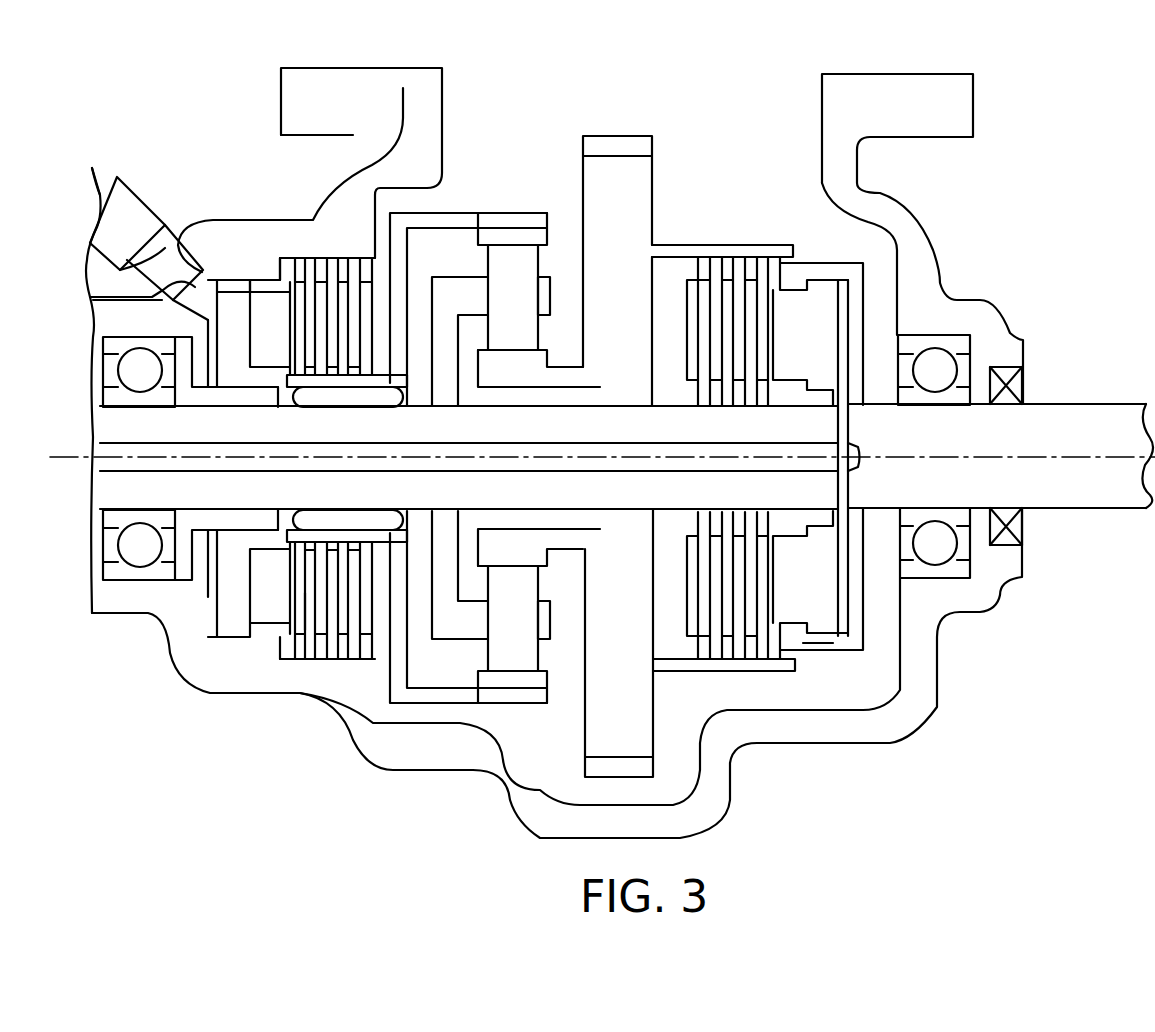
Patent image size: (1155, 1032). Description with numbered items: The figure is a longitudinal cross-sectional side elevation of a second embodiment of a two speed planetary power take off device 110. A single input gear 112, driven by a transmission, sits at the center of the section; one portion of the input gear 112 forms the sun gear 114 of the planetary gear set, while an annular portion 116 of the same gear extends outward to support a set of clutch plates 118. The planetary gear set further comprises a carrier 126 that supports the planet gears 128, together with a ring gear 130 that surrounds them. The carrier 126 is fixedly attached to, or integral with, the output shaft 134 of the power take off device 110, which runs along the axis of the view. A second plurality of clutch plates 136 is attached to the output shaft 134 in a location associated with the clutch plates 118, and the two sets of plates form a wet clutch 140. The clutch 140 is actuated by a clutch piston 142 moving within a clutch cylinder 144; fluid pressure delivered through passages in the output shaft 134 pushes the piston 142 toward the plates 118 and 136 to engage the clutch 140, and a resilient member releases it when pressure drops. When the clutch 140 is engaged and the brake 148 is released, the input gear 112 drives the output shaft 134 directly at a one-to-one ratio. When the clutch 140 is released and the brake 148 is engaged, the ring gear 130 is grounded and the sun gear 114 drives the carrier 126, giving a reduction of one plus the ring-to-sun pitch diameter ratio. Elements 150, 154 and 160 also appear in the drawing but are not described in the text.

The power take off device 110 is at (1042, 137).
The input gear 112 is at (622, 143).
The sun gear 114 is at (583, 348).
The annular portion 116 is at (670, 250).
The clutch plates 118 is at (752, 272).
The carrier 126 is at (448, 287).
The planet gears 128 is at (513, 263).
The ring gear 130 is at (470, 237).
The output shaft 134 is at (1103, 438).
The clutch plates 136 is at (702, 325).
The wet clutch 140 is at (840, 662).
The clutch piston 142 is at (827, 343).
The clutch cylinder 144 is at (802, 643).
The brake 148 is at (240, 608).
The hub 150 is at (236, 298).
The clutch plates 154 is at (343, 653).
The sensor 160 is at (197, 300).